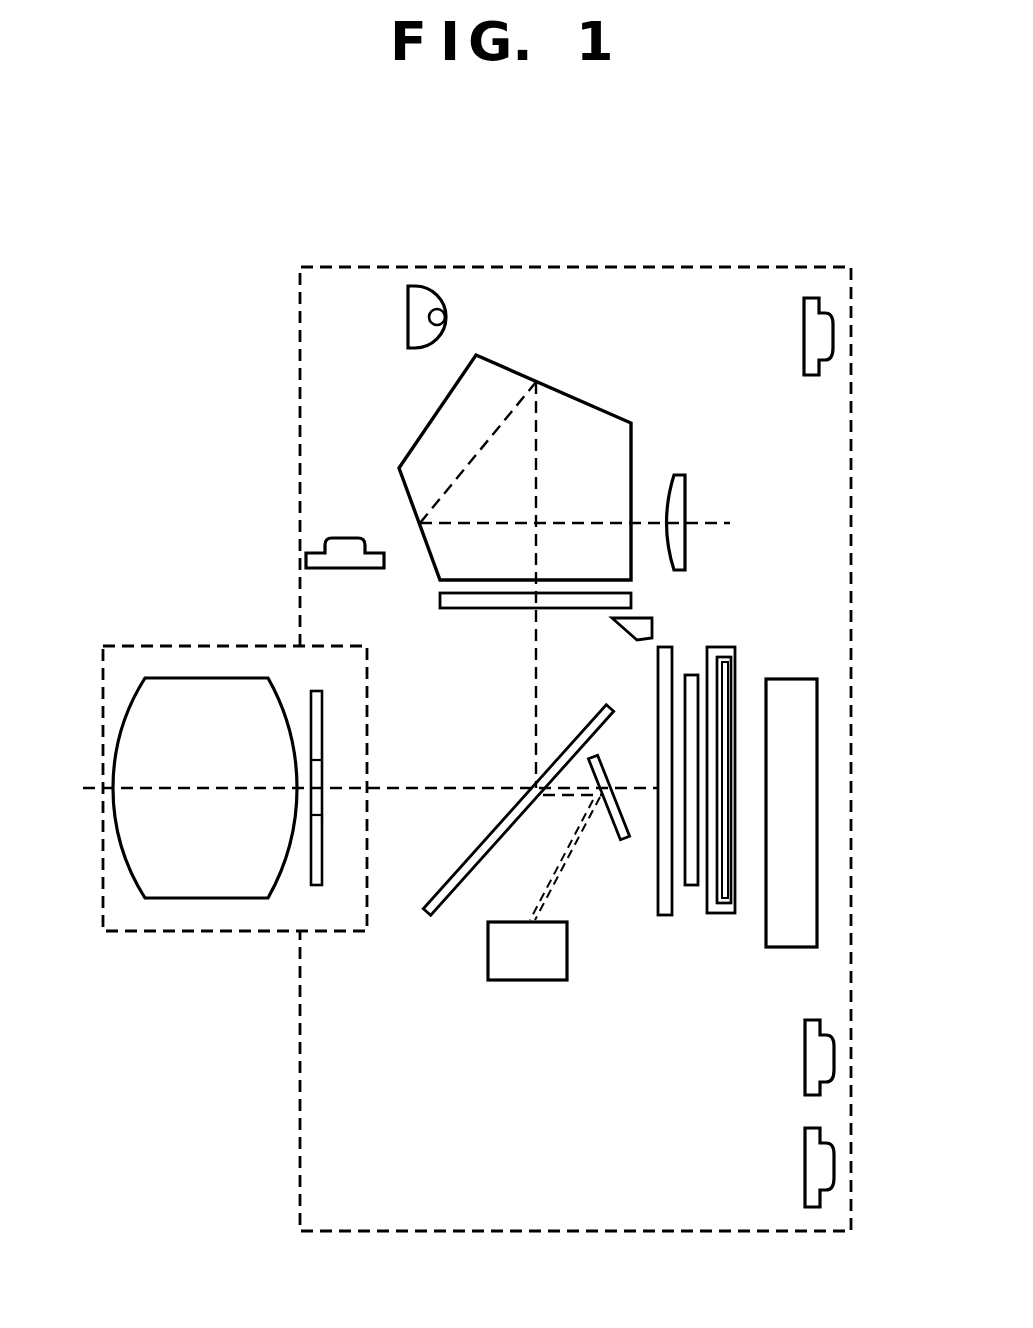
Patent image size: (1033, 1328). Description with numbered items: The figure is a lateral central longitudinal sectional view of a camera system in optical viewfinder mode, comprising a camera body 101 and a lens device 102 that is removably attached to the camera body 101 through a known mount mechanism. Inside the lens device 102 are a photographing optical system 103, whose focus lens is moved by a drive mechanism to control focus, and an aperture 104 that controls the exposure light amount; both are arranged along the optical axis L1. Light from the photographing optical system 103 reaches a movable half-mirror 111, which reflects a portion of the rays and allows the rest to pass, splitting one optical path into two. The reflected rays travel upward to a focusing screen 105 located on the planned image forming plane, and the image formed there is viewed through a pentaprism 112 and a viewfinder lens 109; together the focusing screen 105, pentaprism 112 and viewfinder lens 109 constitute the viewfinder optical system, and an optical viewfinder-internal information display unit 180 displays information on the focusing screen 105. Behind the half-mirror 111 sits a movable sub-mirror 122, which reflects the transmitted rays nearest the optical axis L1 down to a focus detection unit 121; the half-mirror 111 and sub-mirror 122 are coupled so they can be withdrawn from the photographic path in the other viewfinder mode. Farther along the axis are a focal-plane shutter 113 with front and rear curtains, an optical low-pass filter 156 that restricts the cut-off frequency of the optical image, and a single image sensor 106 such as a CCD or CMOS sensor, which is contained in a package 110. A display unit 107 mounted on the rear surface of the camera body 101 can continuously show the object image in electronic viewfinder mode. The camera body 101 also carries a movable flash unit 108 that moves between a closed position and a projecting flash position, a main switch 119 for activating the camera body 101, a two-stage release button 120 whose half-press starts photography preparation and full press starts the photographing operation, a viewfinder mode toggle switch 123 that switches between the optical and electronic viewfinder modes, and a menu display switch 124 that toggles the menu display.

The camera body 101 is at (530, 266).
The lens device 102 is at (159, 646).
The optical axis L1 is at (135, 788).
The photographing optical system 103 is at (160, 880).
The aperture 104 is at (313, 887).
The focusing screen 105 is at (482, 612).
The image sensor 106 is at (735, 652).
The display unit 107 is at (795, 949).
The flash unit 108 is at (406, 318).
The viewfinder lens 109 is at (671, 474).
The package 110 is at (710, 645).
The half-mirror 111 is at (428, 916).
The pentaprism 112 is at (585, 388).
The focal-plane shutter 113 is at (665, 917).
The main switch 119 is at (835, 336).
The release button 120 is at (320, 553).
The focus detection unit 121 is at (543, 982).
The sub-mirror 122 is at (626, 840).
The viewfinder mode toggle switch 123 is at (836, 1057).
The menu display switch 124 is at (836, 1167).
The optical low-pass filter 156 is at (691, 887).
The optical viewfinder-internal information display unit 180 is at (622, 630).